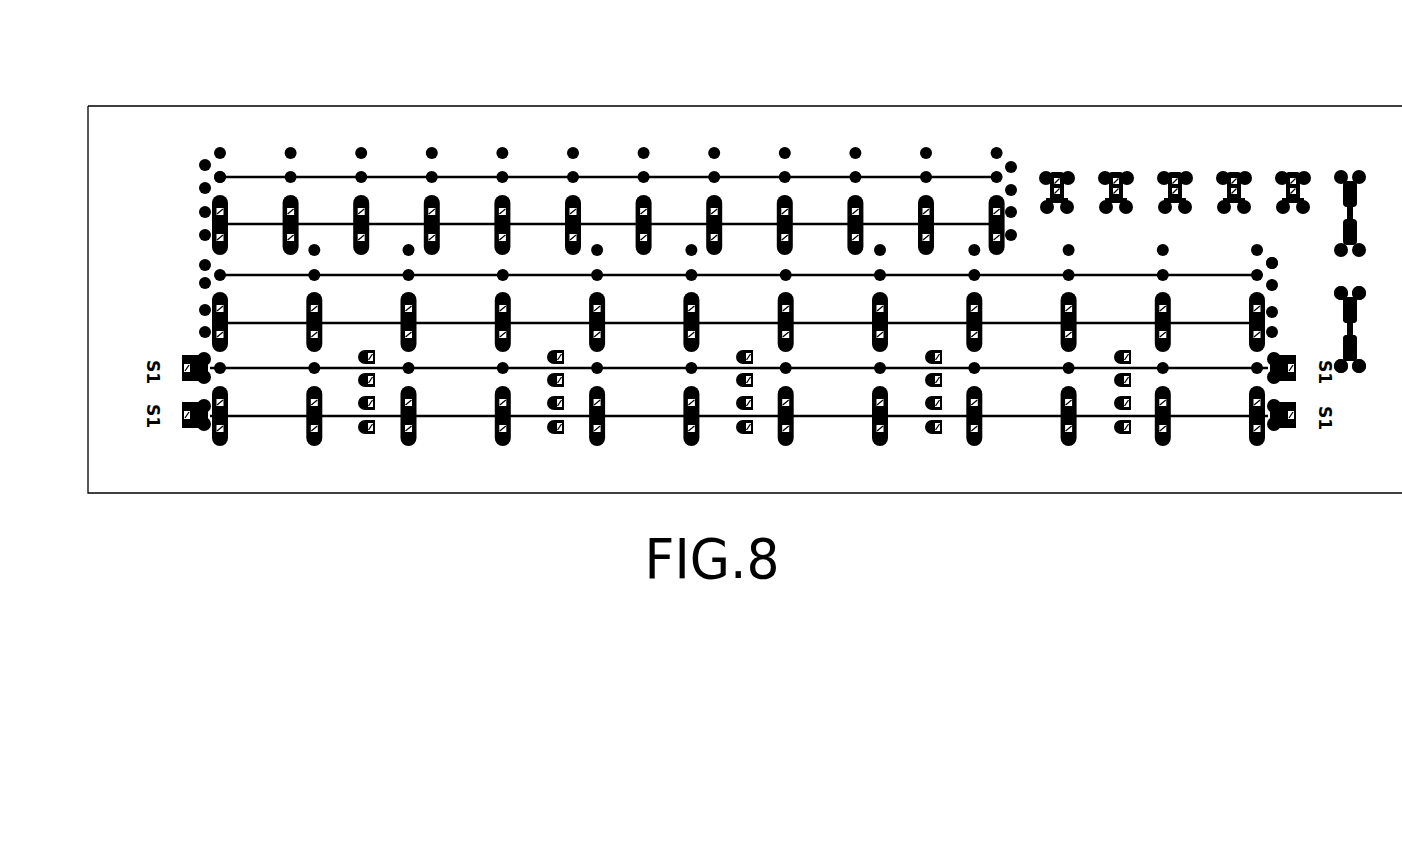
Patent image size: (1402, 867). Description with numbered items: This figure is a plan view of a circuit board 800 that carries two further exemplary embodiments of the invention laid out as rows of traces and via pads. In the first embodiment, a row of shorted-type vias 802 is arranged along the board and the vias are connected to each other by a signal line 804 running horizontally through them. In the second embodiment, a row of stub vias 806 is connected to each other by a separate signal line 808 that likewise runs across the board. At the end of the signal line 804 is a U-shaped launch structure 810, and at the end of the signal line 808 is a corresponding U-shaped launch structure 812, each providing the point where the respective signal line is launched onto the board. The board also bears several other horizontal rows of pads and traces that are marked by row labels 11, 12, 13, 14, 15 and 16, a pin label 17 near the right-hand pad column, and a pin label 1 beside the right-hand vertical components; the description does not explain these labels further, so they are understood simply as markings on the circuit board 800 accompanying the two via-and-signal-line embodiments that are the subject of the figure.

The circuit board 800 is at (1220, 107).
The shorted-type vias 802 is at (420, 220).
The signal line 804 is at (465, 218).
The stub vias 806 is at (652, 178).
The signal line 808 is at (818, 178).
The U-shaped launch structure 810 is at (204, 213).
The U-shaped launch structure 812 is at (1017, 163).
The row trace 11 is at (739, 416).
The row trace 12 is at (739, 368).
The row trace 13 is at (738, 322).
The row trace 14 is at (738, 275).
The row trace 15 is at (243, 224).
The row trace 16 is at (243, 177).
The pin 17 is at (1293, 256).
The pin 1 is at (1354, 348).